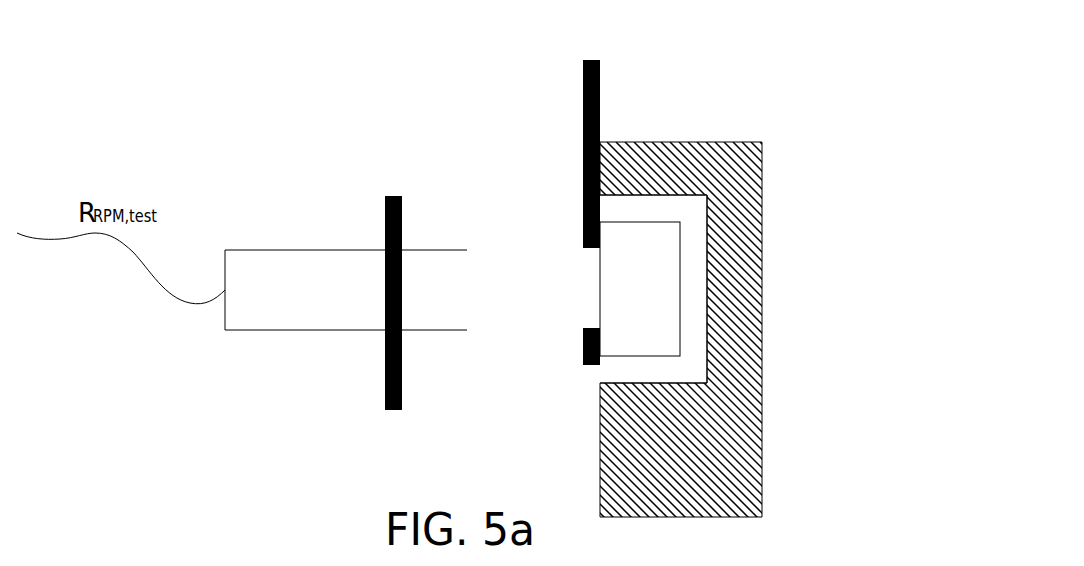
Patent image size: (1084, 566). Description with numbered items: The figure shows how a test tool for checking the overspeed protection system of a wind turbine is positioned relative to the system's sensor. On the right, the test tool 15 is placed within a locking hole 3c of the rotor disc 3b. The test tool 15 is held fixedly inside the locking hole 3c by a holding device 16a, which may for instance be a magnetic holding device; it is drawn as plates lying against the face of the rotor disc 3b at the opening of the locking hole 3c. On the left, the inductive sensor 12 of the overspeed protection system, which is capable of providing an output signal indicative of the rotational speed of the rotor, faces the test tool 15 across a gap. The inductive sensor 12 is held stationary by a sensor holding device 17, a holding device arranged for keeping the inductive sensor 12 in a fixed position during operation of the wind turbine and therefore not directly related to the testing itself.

The inductive sensor 12 is at (346, 290).
The sensor holding device 17 is at (402, 398).
The holding device 16a is at (601, 82).
The rotor disc 3b is at (743, 275).
The locking hole 3c is at (610, 367).
The test tool 15 is at (640, 289).